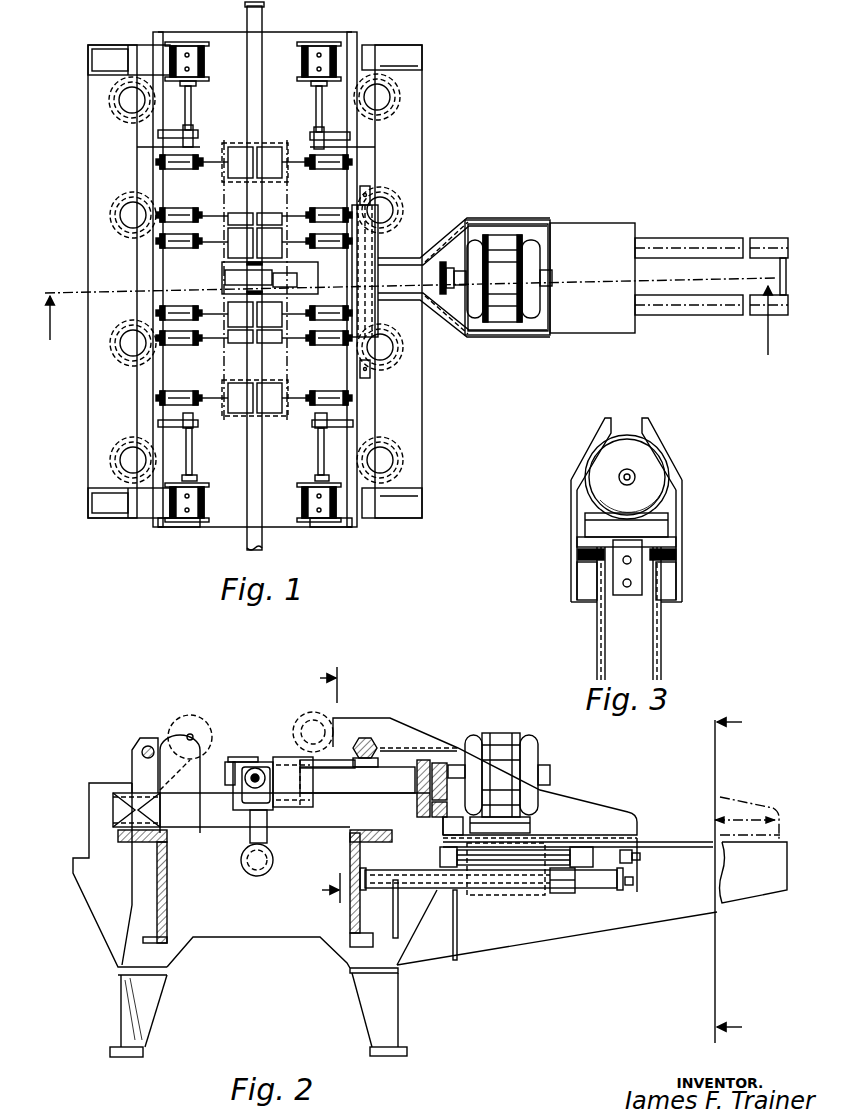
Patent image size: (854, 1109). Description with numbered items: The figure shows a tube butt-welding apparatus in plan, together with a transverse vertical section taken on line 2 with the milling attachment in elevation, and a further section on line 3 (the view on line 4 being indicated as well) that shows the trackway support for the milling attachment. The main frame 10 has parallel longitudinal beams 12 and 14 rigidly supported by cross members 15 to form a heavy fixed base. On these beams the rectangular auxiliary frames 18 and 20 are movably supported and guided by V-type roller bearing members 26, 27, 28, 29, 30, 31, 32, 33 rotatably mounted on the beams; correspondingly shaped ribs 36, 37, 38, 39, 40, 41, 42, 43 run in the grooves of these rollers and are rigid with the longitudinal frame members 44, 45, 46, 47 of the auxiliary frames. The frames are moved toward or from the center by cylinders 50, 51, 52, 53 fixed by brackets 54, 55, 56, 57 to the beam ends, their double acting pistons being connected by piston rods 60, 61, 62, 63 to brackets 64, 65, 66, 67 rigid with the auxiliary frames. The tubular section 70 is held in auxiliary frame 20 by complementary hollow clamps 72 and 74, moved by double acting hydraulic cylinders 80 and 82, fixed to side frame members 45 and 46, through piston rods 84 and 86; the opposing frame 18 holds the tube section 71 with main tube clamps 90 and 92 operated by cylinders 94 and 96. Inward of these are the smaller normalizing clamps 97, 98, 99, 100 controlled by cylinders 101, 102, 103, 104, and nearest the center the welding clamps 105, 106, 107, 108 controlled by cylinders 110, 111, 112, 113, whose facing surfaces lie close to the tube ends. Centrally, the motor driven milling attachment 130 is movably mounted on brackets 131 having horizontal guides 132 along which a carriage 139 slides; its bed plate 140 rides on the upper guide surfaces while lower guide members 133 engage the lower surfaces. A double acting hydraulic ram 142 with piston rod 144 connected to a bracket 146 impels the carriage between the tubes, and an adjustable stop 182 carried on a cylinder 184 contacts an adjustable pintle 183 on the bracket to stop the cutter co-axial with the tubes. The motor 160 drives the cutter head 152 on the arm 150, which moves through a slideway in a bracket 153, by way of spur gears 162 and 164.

In FIG. 1, the section line 2— 2 is at (405, 334).
In FIG. 2, the section line 3— 3 is at (736, 878).
In FIG. 2, the section line 4— 4 is at (322, 785).
In FIG. 2, the main frame 10 is at (125, 907).
In FIG. 1, the longitudinal beam 12 is at (92, 158).
In FIG. 2, the longitudinal beam 12 is at (168, 888).
In FIG. 1, the longitudinal beam 14 is at (423, 131).
In FIG. 2, the longitudinal beam 14 is at (352, 904).
In FIG. 2, the cross members 15 is at (247, 937).
In FIG. 1, the auxiliary frame 18 is at (214, 541).
In FIG. 1, the auxiliary frame 20 is at (238, 32).
In FIG. 1, the V-type roller bearing member 26 is at (400, 98).
In FIG. 1, the V-type roller bearing member 27 is at (405, 198).
In FIG. 1, the V-type roller bearing member 28 is at (402, 352).
In FIG. 1, the V-type roller bearing member 29 is at (400, 462).
In FIG. 1, the V-type roller bearing member 30 is at (108, 106).
In FIG. 1, the V-type roller bearing member 31 is at (110, 222).
In FIG. 1, the V-type roller bearing member 32 is at (110, 365).
In FIG. 1, the V-type roller bearing member 33 is at (112, 470).
In FIG. 1, the rib 36 is at (150, 132).
In FIG. 1, the rib 37 is at (150, 242).
In FIG. 1, the rib 38 is at (147, 312).
In FIG. 1, the rib 39 is at (150, 423).
In FIG. 1, the rib 40 is at (358, 138).
In FIG. 1, the rib 41 is at (366, 188).
In FIG. 1, the rib 42 is at (367, 373).
In FIG. 1, the rib 43 is at (366, 433).
In FIG. 1, the longitudinal frame member 44 is at (166, 530).
In FIG. 1, the side frame member 45 is at (158, 34).
In FIG. 1, the side frame member 46 is at (353, 40).
In FIG. 1, the longitudinal frame member 47 is at (340, 530).
In FIG. 1, the cylinder 50 is at (209, 62).
In FIG. 1, the cylinder 51 is at (297, 58).
In FIG. 1, the cylinder 52 is at (306, 505).
In FIG. 1, the cylinder 53 is at (209, 505).
In FIG. 1, the bracket 54 is at (146, 48).
In FIG. 1, the bracket 55 is at (380, 50).
In FIG. 1, the bracket 56 is at (366, 522).
In FIG. 1, the bracket 57 is at (147, 512).
In FIG. 1, the piston rod 60 is at (192, 96).
In FIG. 1, the piston rod 61 is at (316, 98).
In FIG. 1, the piston rod 62 is at (318, 462).
In FIG. 1, the piston rod 63 is at (193, 460).
In FIG. 1, the bracket 64 is at (170, 134).
In FIG. 1, the bracket 65 is at (318, 132).
In FIG. 1, the bracket 66 is at (314, 428).
In FIG. 1, the bracket 67 is at (195, 427).
In FIG. 1, the tubular section 70 is at (265, 22).
In FIG. 1, the tube section 71 is at (262, 550).
In FIG. 1, the clamp 72 is at (242, 148).
In FIG. 1, the clamp 74 is at (272, 148).
In FIG. 1, the double acting hydraulic cylinder 80 is at (159, 163).
In FIG. 1, the double acting hydraulic cylinder 82 is at (332, 170).
In FIG. 1, the piston rod 84 is at (218, 170).
In FIG. 1, the piston rod 86 is at (300, 168).
In FIG. 1, the main tube clamp 90 is at (238, 384).
In FIG. 1, the main tube clamp 92 is at (275, 384).
In FIG. 1, the double acting hydraulic cylinder 94 is at (158, 397).
In FIG. 1, the double acting hydraulic cylinder 96 is at (350, 398).
In FIG. 1, the normalizing clamp 97 is at (242, 213).
In FIG. 1, the normalizing clamp 98 is at (268, 213).
In FIG. 1, the normalizing clamp 99 is at (244, 344).
In FIG. 1, the normalizing clamp 100 is at (270, 344).
In FIG. 1, the double acting hydraulic cylinder 101 is at (186, 205).
In FIG. 1, the double acting hydraulic cylinder 102 is at (330, 209).
In FIG. 1, the double acting hydraulic cylinder 103 is at (183, 323).
In FIG. 1, the double acting hydraulic cylinder 104 is at (330, 323).
In FIG. 1, the welding clamp 105 is at (238, 243).
In FIG. 1, the welding clamp 106 is at (266, 247).
In FIG. 1, the welding clamp 107 is at (240, 314).
In FIG. 1, the welding clamp 108 is at (269, 314).
In FIG. 1, the double acting hydraulic cylinder 110 is at (150, 256).
In FIG. 1, the double acting hydraulic cylinder 111 is at (422, 215).
In FIG. 1, the double acting hydraulic cylinder 112 is at (160, 337).
In FIG. 1, the double acting hydraulic cylinder 113 is at (400, 332).
In FIG. 1, the milling attachment 130 is at (755, 218).
In FIG. 3, the bracket 131 is at (600, 612).
In FIG. 3, the horizontal guide 132 is at (590, 552).
In FIG. 3, the lower guide member 133 is at (578, 563).
In FIG. 3, the carriage 139 is at (676, 483).
In FIG. 2, the carriage 139 is at (563, 793).
In FIG. 3, the bed plate 140 is at (655, 546).
In FIG. 2, the double acting hydraulic ram 142 is at (456, 960).
In FIG. 2, the piston rod 144 is at (597, 892).
In FIG. 2, the bracket 146 is at (632, 893).
In FIG. 2, the arm 150 is at (300, 770).
In FIG. 2, the cutter head 152 is at (243, 765).
In FIG. 2, the bracket 153 is at (391, 748).
In FIG. 1, the motor 160 is at (509, 278).
In FIG. 3, the motor 160 is at (626, 437).
In FIG. 2, the motor 160 is at (490, 740).
In FIG. 2, the spur gear 162 is at (433, 757).
In FIG. 2, the spur gear 164 is at (442, 798).
In FIG. 2, the adjustable stop 182 is at (600, 840).
In FIG. 2, the adjustable pintle 183 is at (641, 857).
In FIG. 2, the cylinder 184 is at (522, 868).